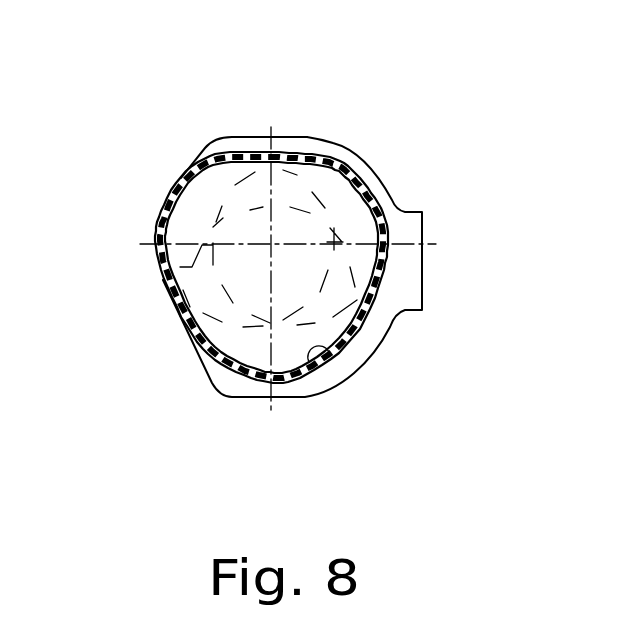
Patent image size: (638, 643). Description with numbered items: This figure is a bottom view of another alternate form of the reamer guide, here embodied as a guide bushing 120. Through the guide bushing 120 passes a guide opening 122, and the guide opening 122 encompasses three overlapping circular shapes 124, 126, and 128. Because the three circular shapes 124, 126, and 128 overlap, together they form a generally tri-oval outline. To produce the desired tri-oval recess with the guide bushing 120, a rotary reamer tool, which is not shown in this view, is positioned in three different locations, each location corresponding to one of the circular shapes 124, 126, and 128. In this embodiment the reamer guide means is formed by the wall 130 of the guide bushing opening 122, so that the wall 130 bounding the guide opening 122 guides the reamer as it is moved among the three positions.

The guide bushing 120 is at (213, 383).
The guide opening 122 is at (345, 207).
The circular shape 124 is at (306, 187).
The circular shape 126 is at (221, 205).
The circular shape 128 is at (163, 267).
The wall 130 is at (340, 357).